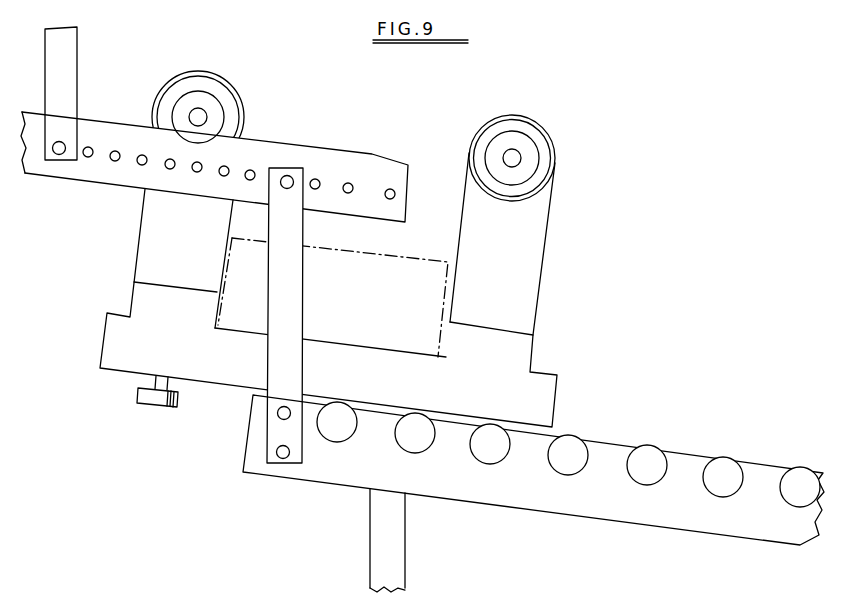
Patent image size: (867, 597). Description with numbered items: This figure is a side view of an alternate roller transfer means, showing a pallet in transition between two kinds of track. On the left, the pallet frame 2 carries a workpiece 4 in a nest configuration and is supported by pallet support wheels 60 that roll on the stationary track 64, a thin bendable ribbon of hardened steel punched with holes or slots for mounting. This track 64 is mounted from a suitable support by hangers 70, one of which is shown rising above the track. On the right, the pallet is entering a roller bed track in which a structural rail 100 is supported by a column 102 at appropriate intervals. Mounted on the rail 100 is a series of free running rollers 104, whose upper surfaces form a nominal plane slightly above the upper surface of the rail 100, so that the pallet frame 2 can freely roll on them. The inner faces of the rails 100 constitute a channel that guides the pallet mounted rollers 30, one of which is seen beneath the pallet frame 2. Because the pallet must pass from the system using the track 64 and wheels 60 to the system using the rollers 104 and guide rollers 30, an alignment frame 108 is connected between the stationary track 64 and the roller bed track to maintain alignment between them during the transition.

The pallet frame 2 is at (533, 350).
The workpiece 4 is at (393, 252).
The pallet mounted rollers 30 is at (158, 405).
The pallet support wheels 60 is at (235, 100).
The track 64 is at (368, 153).
The hangers 70 is at (68, 80).
The structural rails 100 is at (677, 523).
The columns 102 is at (407, 555).
The free running rollers 104 is at (583, 440).
The alignment frame 108 is at (303, 375).